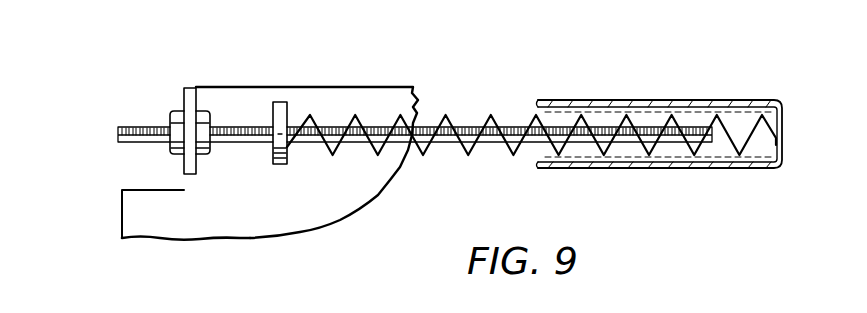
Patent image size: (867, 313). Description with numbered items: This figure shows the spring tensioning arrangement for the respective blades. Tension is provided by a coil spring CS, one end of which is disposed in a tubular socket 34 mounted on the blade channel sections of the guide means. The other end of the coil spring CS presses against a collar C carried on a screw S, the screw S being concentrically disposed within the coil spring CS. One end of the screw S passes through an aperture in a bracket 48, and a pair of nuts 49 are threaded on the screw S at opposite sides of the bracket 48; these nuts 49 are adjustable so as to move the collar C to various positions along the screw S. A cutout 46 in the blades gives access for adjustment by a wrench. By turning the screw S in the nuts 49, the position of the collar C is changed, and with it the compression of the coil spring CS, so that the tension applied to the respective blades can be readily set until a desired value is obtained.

The tubular socket 34 is at (692, 102).
The cutout 46 is at (153, 177).
The bracket 48 is at (190, 97).
The nuts 49 is at (174, 155).
The screw S is at (123, 130).
The collar C is at (285, 102).
The coil spring CS is at (448, 118).